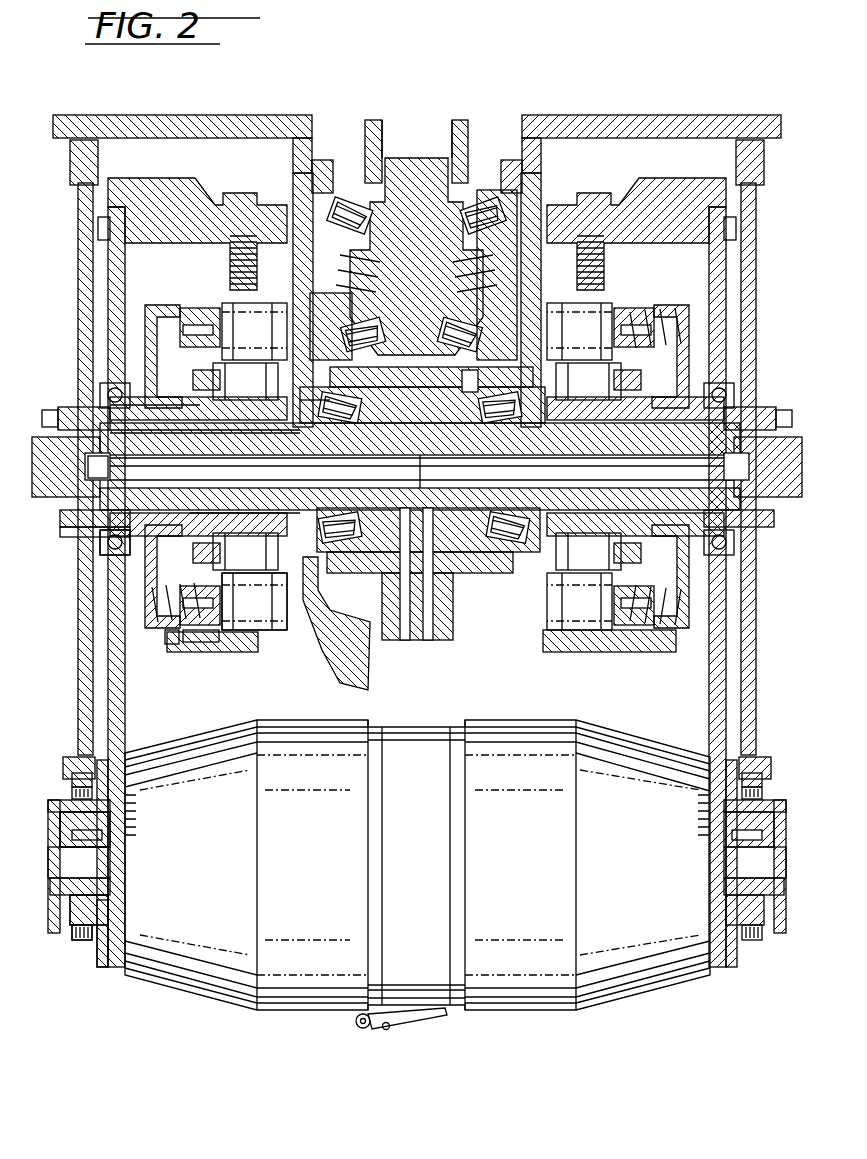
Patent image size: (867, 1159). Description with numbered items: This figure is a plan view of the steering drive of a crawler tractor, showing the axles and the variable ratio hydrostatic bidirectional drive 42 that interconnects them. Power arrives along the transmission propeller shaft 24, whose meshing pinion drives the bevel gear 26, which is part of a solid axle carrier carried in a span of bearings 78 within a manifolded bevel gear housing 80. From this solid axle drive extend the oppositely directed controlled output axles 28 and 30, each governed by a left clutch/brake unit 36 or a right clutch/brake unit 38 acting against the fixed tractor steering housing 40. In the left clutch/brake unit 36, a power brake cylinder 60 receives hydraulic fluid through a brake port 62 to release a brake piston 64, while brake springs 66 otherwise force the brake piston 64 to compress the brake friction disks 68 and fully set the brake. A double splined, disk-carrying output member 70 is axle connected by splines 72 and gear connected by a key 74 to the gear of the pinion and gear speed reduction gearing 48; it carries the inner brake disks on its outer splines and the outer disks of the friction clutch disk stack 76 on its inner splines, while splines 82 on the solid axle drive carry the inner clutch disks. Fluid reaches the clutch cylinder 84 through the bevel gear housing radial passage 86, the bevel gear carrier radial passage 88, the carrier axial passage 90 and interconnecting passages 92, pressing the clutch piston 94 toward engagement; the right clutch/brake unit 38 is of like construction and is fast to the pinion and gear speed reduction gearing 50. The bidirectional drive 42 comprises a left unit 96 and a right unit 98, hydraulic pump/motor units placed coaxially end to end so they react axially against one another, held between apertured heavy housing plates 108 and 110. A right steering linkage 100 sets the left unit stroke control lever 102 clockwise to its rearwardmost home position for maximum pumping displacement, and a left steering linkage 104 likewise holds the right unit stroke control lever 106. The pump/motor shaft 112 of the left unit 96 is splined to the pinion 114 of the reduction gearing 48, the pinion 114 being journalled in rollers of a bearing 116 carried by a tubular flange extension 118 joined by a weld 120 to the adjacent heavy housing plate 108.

The transmission propeller shaft 24 is at (383, 143).
The bevel gear 26 is at (382, 312).
The controlled output axle 28 is at (52, 497).
The controlled output axle 30 is at (790, 480).
The left clutch/brake unit 36 is at (268, 655).
The right clutch/brake unit 38 is at (568, 653).
The tractor steering housing 40 is at (262, 296).
The bidirectional drive 42 is at (417, 845).
The pinion and gear speed reduction gearing 48 is at (68, 757).
The pinion and gear speed reduction gearing 50 is at (755, 757).
The power brake cylinder 60 is at (200, 642).
The brake port 62 is at (250, 652).
The brake piston 64 is at (182, 645).
The brake springs 66 is at (162, 625).
The brake friction disks 68 is at (282, 618).
The disk-carrying output member 70 is at (92, 500).
The splines 72 is at (66, 538).
The key 74 is at (74, 560).
The friction clutch disk stack 76 is at (305, 500).
The span of bearings 78 is at (345, 495).
The bevel gear housing 80 is at (352, 560).
The splines 82 is at (270, 513).
The clutch cylinder 84 is at (172, 515).
The bevel gear housing radial passage 86 is at (380, 570).
The bevel gear carrier radial passage 88 is at (430, 470).
The carrier axial passage 90 is at (340, 495).
The interconnecting passages 92 is at (98, 462).
The clutch piston 94 is at (198, 518).
The left unit 96 is at (320, 727).
The right unit 98 is at (490, 727).
The right steering linkage 100 is at (450, 1000).
The left unit stroke control lever 102 is at (445, 990).
The left steering linkage 104 is at (388, 1000).
The right unit stroke control lever 106 is at (410, 1030).
The heavy housing plate 108 is at (115, 745).
The heavy housing plate 110 is at (735, 965).
The pump/motor shaft 112 is at (70, 880).
The pinion 114 is at (50, 930).
The bearing 116 is at (112, 820).
The tubular flange extension 118 is at (78, 940).
The weld 120 is at (106, 965).